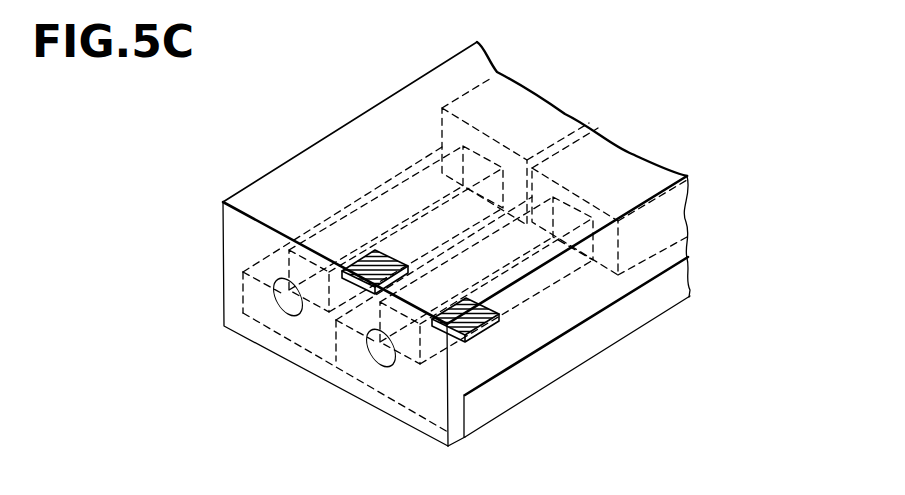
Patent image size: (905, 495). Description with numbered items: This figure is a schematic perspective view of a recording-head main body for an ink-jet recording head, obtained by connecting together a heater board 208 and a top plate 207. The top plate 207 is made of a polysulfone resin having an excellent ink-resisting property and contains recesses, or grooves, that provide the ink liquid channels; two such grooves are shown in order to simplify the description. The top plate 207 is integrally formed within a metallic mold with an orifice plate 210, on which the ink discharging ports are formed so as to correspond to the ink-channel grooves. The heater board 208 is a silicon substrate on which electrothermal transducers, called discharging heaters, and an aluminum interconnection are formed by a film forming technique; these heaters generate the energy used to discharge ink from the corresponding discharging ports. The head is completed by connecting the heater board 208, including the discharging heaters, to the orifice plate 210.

The top plate 207 is at (312, 158).
The heater board 208 is at (610, 328).
The orifice plate 210 is at (455, 423).